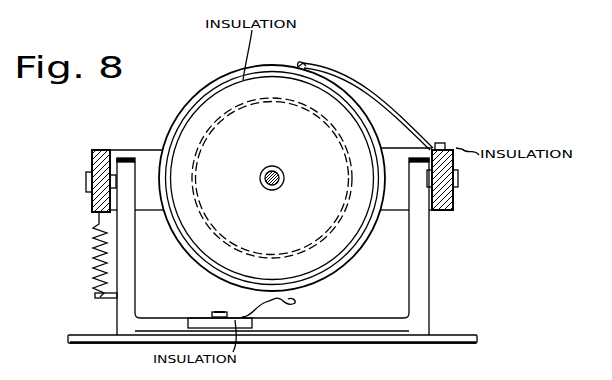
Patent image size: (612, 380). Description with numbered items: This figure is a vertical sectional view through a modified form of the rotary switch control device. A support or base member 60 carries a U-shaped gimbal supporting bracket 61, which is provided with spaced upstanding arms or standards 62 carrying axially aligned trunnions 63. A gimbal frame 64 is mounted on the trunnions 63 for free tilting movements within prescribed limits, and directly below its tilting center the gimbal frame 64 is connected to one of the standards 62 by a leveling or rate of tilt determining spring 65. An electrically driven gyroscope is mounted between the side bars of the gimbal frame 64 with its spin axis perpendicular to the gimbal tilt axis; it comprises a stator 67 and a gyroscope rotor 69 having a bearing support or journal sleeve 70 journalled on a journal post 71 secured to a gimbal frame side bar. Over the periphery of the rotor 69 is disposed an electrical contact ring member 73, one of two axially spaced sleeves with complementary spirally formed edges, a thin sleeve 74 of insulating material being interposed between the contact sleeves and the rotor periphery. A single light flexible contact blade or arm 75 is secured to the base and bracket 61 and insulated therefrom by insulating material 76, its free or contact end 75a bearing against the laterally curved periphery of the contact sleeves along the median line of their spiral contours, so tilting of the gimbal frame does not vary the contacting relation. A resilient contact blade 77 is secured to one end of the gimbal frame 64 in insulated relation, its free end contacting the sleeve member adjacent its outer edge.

The support or base member 60 is at (440, 337).
The U-shaped gimbal supporting bracket 61 is at (371, 322).
The upstanding arms or standards 62 is at (420, 258).
The trunnions 63 is at (458, 181).
The gimbal frame 64 is at (454, 205).
The leveling or rate of tilt determining spring 65 is at (93, 275).
The stator 67 is at (327, 148).
The gyroscope rotor 69 is at (172, 130).
The bearing support or journal sleeve 70 is at (285, 180).
The journal post 71 is at (281, 171).
The electrical contact ring member 73 is at (265, 68).
The sleeve of insulating material 74 is at (224, 82).
The contact blade or arm 75 is at (257, 312).
The free or contact end 75a is at (278, 305).
The insulating material 76 is at (262, 324).
The resilient contact blade 77 is at (404, 121).